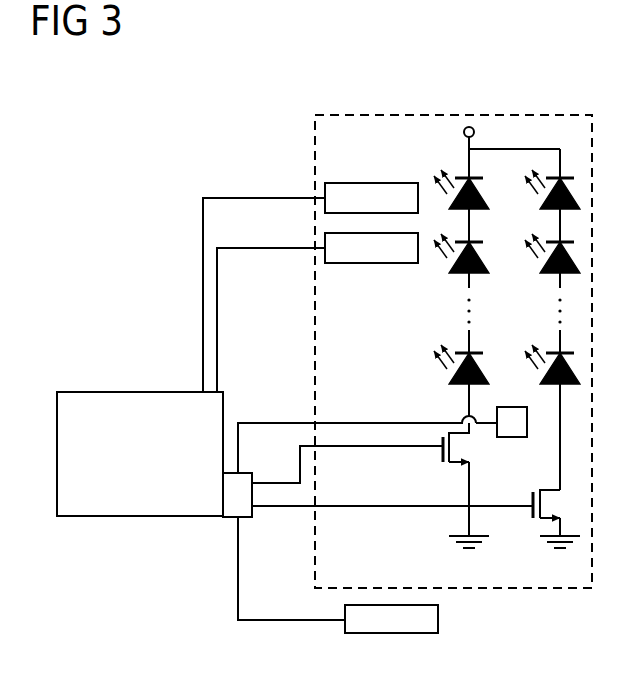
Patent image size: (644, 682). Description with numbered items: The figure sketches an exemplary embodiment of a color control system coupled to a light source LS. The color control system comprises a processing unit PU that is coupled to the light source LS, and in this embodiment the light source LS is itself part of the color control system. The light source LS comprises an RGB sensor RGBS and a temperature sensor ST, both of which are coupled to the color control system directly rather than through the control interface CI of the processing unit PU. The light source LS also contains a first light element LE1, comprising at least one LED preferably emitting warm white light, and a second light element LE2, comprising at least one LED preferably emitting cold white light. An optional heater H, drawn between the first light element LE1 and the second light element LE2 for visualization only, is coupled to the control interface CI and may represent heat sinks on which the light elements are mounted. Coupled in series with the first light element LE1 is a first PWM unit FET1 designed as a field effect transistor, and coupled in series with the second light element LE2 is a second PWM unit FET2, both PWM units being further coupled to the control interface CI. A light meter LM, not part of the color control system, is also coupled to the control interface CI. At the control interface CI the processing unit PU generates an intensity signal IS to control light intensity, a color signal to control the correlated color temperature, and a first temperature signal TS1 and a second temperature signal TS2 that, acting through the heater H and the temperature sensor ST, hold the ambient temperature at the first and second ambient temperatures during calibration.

The light source LS is at (453, 351).
The processing unit PU is at (140, 454).
The control interface CI is at (237, 495).
The RGB sensor RGBS is at (310, 287).
The temperature sensor ST is at (317, 312).
The first light element LE1 is at (495, 271).
The second light element LE2 is at (550, 319).
The heater H is at (501, 422).
The first temperature signal TS1 is at (354, 436).
The second temperature signal TS2 is at (357, 444).
The intensity signal IS is at (392, 476).
The first PWM unit FET1 is at (445, 485).
The second PWM unit FET2 is at (538, 506).
The light meter LM is at (338, 575).